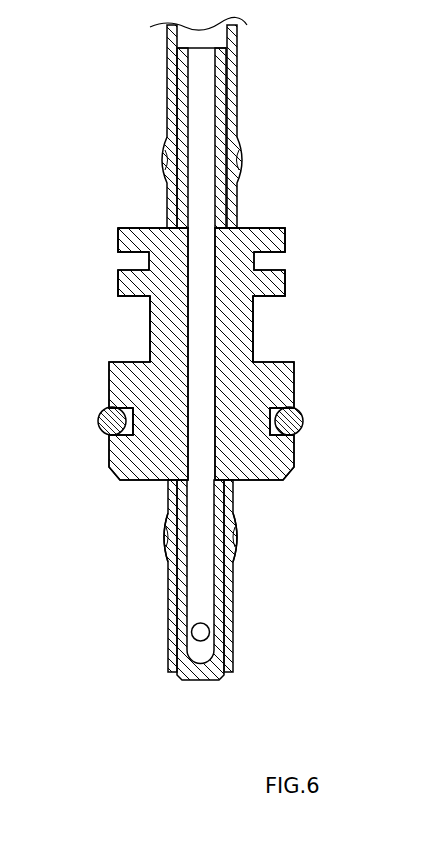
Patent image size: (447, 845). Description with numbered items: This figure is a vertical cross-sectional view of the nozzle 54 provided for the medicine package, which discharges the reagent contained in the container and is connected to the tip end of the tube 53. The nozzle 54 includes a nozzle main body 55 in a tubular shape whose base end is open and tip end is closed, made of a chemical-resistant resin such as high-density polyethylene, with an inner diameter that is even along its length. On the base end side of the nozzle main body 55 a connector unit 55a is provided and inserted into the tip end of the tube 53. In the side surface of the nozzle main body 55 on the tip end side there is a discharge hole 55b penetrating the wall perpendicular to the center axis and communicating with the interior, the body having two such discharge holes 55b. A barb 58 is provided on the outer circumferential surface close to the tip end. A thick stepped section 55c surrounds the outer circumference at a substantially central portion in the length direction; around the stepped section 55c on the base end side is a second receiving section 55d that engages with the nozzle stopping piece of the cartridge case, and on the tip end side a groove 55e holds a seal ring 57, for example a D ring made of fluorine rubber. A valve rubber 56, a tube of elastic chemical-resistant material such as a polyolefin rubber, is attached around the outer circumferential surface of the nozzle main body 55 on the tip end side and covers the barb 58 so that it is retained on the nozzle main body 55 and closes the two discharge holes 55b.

The tube 53 is at (238, 82).
The connector unit 55a is at (181, 92).
The nozzle 54 is at (92, 296).
The nozzle main body 55 is at (275, 227).
The second receiving section 55d is at (255, 260).
The stepped section 55c is at (253, 325).
The groove 55e is at (106, 431).
The seal ring 57 is at (302, 422).
The valve rubber 56 is at (233, 593).
The barb 58 is at (223, 538).
The discharge hole 55b is at (191, 631).